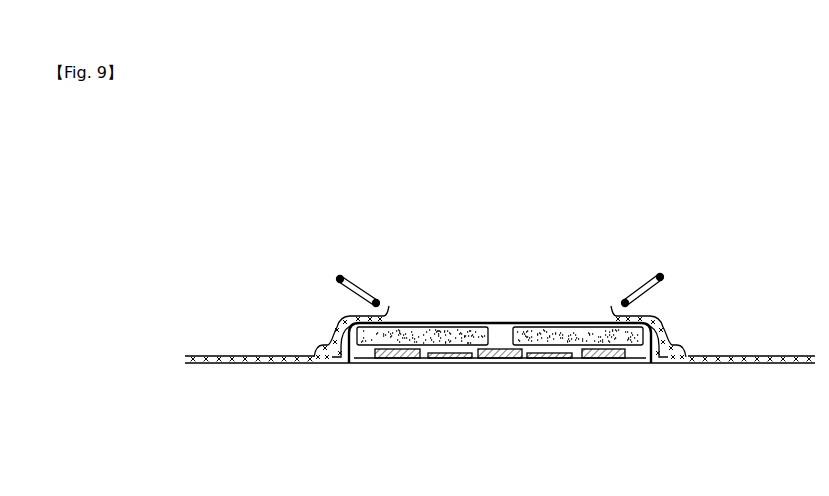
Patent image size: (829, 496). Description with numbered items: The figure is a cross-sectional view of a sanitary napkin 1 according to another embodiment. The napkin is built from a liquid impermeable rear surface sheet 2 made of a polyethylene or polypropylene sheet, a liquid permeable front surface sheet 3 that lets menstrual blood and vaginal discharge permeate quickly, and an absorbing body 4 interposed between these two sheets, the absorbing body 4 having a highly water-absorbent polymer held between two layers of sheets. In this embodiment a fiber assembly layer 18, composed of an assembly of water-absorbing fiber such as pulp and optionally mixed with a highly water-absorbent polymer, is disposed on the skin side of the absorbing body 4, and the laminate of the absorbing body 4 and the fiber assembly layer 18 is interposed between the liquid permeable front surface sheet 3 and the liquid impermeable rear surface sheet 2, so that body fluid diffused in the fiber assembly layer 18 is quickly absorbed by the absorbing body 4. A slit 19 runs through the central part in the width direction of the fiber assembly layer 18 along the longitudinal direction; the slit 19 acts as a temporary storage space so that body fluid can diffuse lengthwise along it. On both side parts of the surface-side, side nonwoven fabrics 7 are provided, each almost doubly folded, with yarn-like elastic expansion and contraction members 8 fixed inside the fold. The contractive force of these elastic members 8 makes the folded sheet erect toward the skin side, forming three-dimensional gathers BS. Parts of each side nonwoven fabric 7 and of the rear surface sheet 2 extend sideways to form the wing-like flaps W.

The sanitary napkin 1 is at (679, 234).
The liquid impermeable rear surface sheet 2 is at (458, 364).
The liquid permeable front surface sheet 3 is at (545, 324).
The absorbing body 4 is at (520, 362).
The side nonwoven fabric 7 is at (337, 330).
The yarn-like elastic expansion and contraction member 8 is at (374, 300).
The fiber assembly layer 18 is at (438, 326).
The slit 19 is at (502, 335).
The wing-like flap W is at (229, 352).
The three-dimensional gather BS is at (376, 278).